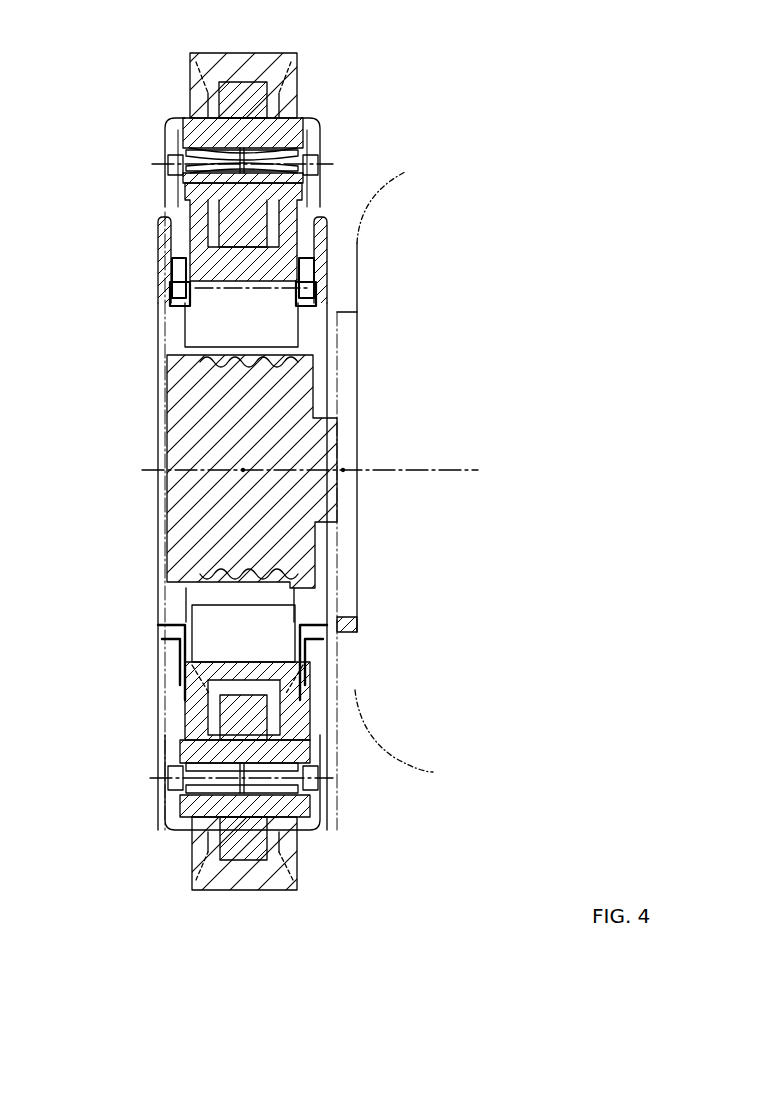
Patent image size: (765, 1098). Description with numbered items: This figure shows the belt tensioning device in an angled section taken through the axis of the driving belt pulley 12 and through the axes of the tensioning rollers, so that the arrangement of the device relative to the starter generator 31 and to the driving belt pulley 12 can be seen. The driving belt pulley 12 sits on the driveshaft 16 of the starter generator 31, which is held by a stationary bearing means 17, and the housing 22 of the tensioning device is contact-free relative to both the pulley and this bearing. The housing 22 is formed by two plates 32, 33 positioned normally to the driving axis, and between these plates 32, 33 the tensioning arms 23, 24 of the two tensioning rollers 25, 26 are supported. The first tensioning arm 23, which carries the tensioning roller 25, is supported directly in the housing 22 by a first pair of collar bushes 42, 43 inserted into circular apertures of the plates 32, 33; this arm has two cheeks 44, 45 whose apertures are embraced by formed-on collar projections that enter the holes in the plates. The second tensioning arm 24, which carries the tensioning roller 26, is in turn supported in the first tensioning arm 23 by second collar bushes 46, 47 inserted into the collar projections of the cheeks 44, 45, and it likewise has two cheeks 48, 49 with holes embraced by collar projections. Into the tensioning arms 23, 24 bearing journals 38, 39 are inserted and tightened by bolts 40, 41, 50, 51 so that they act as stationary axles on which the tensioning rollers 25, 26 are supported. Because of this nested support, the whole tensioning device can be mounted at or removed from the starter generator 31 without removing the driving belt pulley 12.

The driving belt pulley 12 is at (180, 548).
The driveshaft 16 is at (330, 518).
The stationary bearing means 17 is at (352, 635).
The housing 22 is at (155, 233).
The first tensioning arm 23 is at (128, 824).
The second tensioning arm 24 is at (128, 80).
The tensioning roller 25 is at (236, 892).
The tensioning roller 26 is at (243, 74).
The starter generator 31 is at (424, 170).
The plate 32 is at (163, 230).
The plate 33 is at (318, 226).
The bearing journal 38 is at (215, 132).
The bearing journal 39 is at (195, 750).
The bolt 40 is at (172, 786).
The bolt 41 is at (184, 157).
The collar bush 42 is at (170, 628).
The collar bush 43 is at (325, 630).
The cheek 44 is at (182, 712).
The cheek 45 is at (308, 714).
The second collar bush 46 is at (172, 302).
The second collar bush 47 is at (325, 300).
The cheek 48 is at (176, 272).
The cheek 49 is at (313, 286).
The bolt 50 is at (318, 786).
The bolt 51 is at (292, 156).